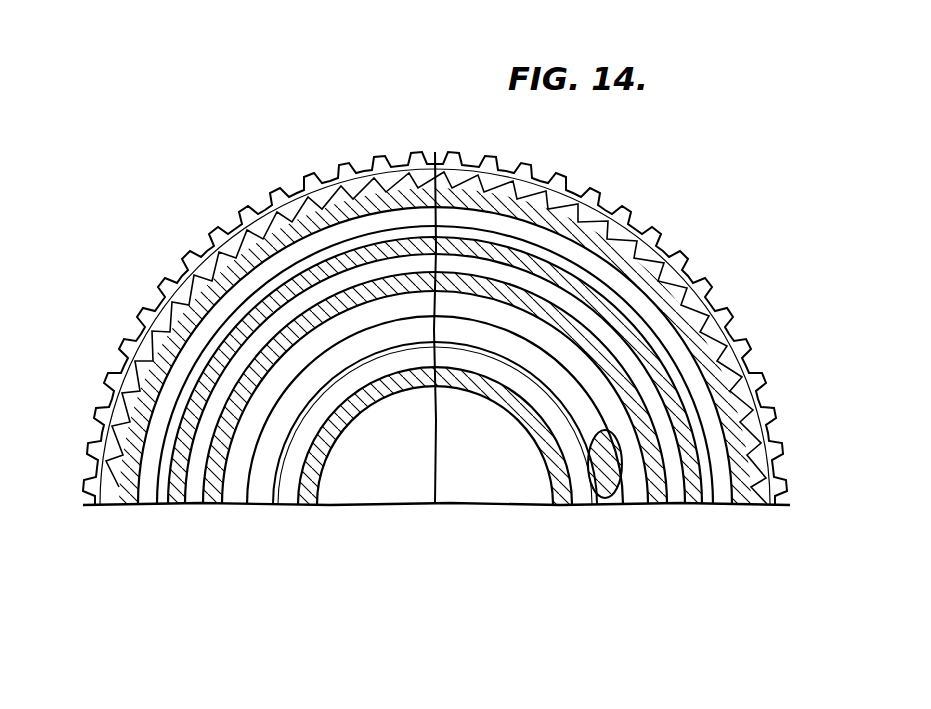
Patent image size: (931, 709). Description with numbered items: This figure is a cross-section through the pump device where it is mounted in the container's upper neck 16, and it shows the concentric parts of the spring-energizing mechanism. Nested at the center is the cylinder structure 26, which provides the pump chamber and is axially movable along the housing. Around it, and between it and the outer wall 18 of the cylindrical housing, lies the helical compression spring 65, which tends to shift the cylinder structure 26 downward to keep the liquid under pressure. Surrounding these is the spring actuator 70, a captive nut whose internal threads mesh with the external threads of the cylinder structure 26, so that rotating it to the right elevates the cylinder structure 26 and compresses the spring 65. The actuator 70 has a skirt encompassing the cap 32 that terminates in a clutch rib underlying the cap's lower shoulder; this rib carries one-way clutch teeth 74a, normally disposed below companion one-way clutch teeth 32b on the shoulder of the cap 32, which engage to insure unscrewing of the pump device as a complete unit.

The spring actuator 70 is at (738, 340).
The one-way clutch teeth 32b is at (608, 232).
The one-way clutch teeth 74a is at (232, 243).
The cap 32 is at (155, 400).
The upper neck 16 is at (172, 482).
The outer wall 18 is at (207, 492).
The cylinder structure 26 is at (302, 502).
The helical compression spring 65 is at (610, 488).